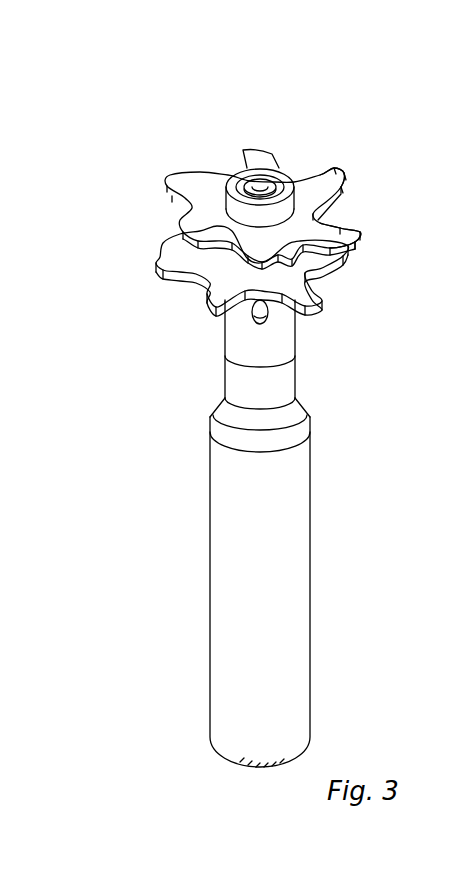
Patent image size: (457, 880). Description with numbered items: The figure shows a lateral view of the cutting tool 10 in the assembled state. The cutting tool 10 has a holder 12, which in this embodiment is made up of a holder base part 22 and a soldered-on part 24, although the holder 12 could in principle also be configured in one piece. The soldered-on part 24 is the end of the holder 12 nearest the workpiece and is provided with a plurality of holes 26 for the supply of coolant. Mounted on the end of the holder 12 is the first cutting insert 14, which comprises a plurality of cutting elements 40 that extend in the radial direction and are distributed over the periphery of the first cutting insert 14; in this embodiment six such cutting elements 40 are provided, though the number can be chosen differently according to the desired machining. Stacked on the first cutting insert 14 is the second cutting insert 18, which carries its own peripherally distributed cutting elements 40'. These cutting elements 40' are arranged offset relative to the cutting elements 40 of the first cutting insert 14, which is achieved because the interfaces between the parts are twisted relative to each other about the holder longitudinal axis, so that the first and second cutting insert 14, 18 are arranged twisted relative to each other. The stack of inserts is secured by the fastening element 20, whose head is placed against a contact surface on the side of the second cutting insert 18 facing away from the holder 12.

The cutting tool 10 is at (160, 127).
The holder 12 is at (210, 565).
The first cutting insert 14 is at (208, 282).
The second cutting insert 18 is at (195, 213).
The fastening element 20 is at (273, 187).
The holder base part 22 is at (311, 623).
The soldered-on part 24 is at (294, 333).
The holes 26 is at (252, 314).
The cutting elements 40 is at (371, 232).
The cutting elements 40' is at (366, 168).